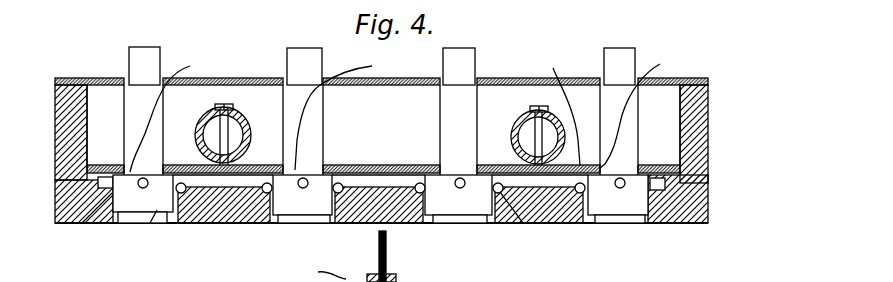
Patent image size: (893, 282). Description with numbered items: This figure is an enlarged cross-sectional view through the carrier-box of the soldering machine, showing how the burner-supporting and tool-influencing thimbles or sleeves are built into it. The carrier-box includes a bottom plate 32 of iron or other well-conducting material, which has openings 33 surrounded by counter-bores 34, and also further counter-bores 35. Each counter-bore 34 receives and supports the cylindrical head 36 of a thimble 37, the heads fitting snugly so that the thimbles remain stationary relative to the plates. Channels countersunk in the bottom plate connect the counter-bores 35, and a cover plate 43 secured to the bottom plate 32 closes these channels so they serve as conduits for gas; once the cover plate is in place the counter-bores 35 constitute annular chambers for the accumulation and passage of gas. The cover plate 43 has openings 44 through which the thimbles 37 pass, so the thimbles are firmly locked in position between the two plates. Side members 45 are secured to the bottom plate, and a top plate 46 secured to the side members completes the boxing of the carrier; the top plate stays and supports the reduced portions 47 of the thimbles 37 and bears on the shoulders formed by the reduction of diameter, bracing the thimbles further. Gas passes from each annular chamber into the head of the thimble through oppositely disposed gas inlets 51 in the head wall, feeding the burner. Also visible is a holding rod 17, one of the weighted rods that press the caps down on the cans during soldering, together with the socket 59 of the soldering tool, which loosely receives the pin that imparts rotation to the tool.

The holding rod 17 is at (388, 265).
The bottom plate 32 is at (248, 223).
The opening 33 is at (160, 224).
The counter-bore 34 is at (93, 221).
The counter-bore 35 is at (82, 223).
The cylindrical head 36 is at (157, 222).
The thimble 37 is at (160, 137).
The cover plate 43 is at (552, 108).
The opening 44 is at (413, 110).
The side member 45 is at (55, 150).
The top plate 46 is at (247, 78).
The reduced portion 47 is at (160, 63).
The gas inlet 51 is at (306, 181).
The socket 59 is at (316, 271).